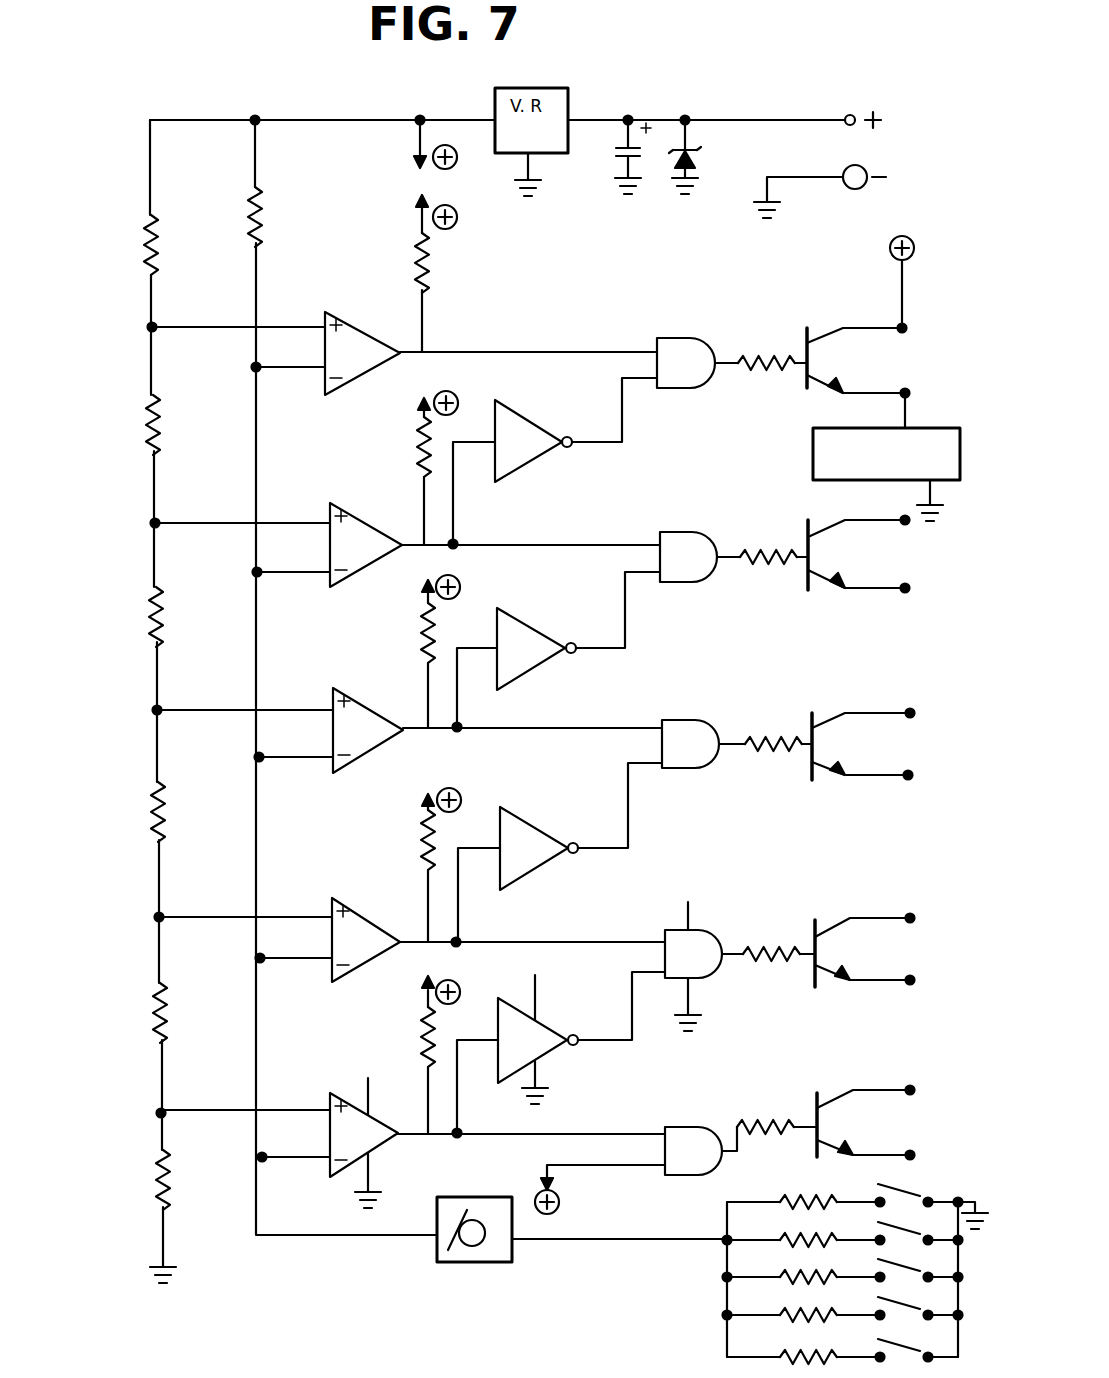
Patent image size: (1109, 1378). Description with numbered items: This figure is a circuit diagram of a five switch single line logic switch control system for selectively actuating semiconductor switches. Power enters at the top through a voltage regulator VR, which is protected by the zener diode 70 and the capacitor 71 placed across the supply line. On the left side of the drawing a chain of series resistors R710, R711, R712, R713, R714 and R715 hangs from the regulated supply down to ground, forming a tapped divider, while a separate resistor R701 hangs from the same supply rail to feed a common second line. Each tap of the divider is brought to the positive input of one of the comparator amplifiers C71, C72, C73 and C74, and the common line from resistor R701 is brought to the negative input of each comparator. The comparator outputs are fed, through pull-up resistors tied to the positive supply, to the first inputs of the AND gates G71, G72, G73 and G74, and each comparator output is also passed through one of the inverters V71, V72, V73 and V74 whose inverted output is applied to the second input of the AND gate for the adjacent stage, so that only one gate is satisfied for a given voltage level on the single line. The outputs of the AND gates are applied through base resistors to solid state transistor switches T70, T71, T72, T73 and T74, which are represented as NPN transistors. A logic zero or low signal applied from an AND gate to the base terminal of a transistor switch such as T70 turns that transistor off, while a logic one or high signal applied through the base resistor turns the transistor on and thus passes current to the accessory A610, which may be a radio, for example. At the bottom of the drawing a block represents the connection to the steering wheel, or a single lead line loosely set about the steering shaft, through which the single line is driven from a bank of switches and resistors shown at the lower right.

The resistor R710 is at (148, 240).
The resistor R701 is at (262, 215).
The resistor R711 is at (148, 406).
The resistor R712 is at (152, 618).
The resistor R713 is at (155, 806).
The resistor R714 is at (157, 1010).
The resistor R715 is at (160, 1162).
The capacitor 71 is at (612, 150).
The zener diode 70 is at (700, 157).
The comparator C71 is at (366, 545).
The comparator C72 is at (368, 730).
The comparator C73 is at (366, 940).
The comparator C74 is at (364, 1143).
The inverter V71 is at (533, 441).
The inverter V72 is at (536, 649).
The inverter V73 is at (539, 848).
The inverter V74 is at (538, 1039).
The AND gate G71 is at (688, 557).
The AND gate G72 is at (690, 744).
The AND gate G73 is at (693, 966).
The AND gate G74 is at (693, 1151).
The transistor switch T70 is at (815, 304).
The transistor switch T71 is at (788, 536).
The transistor switch T72 is at (800, 734).
The transistor switch T73 is at (800, 946).
The transistor switch T74 is at (798, 1119).
The accessory A610 is at (886, 454).